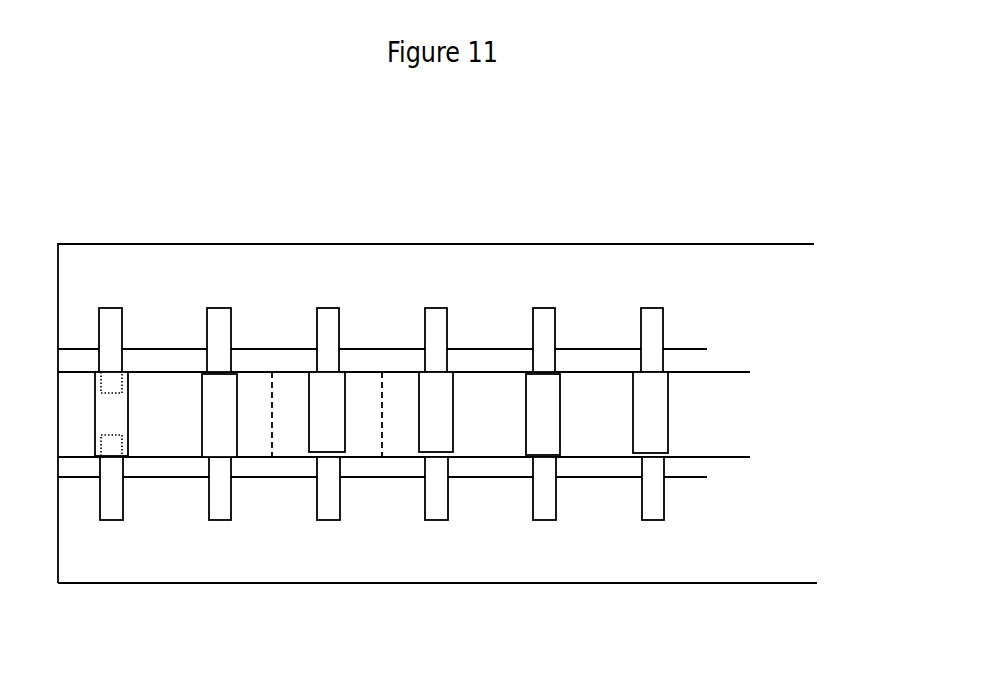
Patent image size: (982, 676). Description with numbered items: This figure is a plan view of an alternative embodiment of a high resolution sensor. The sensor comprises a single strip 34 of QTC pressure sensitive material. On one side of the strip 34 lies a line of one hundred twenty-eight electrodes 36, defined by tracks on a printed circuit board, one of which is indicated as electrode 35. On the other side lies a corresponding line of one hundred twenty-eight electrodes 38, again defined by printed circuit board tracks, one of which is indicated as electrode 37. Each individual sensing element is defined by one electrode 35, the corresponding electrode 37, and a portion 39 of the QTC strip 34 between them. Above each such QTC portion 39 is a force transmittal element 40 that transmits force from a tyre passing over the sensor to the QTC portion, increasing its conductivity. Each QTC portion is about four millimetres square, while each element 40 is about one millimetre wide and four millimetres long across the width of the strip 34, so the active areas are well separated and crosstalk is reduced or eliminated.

The strip of QTC material 34 is at (732, 398).
The electrode 35 is at (325, 302).
The line of electrodes 36 is at (460, 268).
The electrode 37 is at (323, 528).
The line of electrodes 38 is at (449, 538).
The portion of the QTC strip 39 is at (295, 372).
The force transmittal element 40 is at (311, 438).